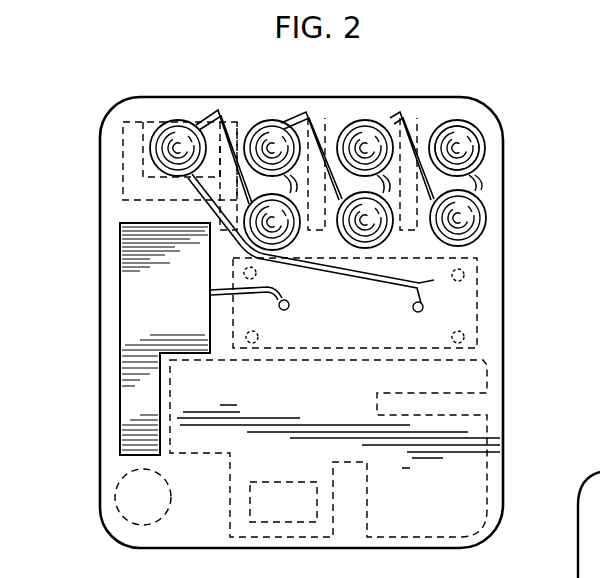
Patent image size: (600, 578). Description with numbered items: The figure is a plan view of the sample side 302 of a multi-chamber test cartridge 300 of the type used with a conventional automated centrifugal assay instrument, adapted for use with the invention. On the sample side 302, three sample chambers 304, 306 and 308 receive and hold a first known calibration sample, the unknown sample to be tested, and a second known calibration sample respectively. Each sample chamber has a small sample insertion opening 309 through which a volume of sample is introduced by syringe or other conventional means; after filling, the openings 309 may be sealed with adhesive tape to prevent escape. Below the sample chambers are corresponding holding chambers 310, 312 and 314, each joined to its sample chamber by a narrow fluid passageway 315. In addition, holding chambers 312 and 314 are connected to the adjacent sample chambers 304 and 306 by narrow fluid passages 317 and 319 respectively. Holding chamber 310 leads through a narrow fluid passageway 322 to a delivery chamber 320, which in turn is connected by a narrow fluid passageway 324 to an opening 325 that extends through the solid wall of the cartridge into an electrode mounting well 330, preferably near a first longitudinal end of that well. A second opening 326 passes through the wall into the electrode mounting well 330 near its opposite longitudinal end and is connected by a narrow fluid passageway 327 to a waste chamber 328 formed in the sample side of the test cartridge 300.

The multi-chamber test cartridge 300 is at (491, 110).
The sample side 302 is at (493, 312).
The sample chamber 304 is at (275, 108).
The sample chamber 306 is at (365, 108).
The sample chamber 308 is at (457, 108).
The sample insertion opening 309 is at (464, 133).
The holding chamber 310 is at (283, 248).
The holding chamber 312 is at (377, 243).
The holding chamber 314 is at (480, 236).
The narrow fluid passageway 315 is at (478, 192).
The narrow fluid passage 317 is at (403, 108).
The narrow fluid passage 319 is at (312, 108).
The delivery chamber 320 is at (178, 108).
The narrow fluid passageway 322 is at (217, 108).
The narrow fluid passageway 324 is at (190, 178).
The opening 325 is at (413, 313).
The second opening 326 is at (289, 307).
The narrow fluid passageway 327 is at (222, 302).
The waste chamber 328 is at (125, 377).
The electrode mounting well 330 is at (440, 338).